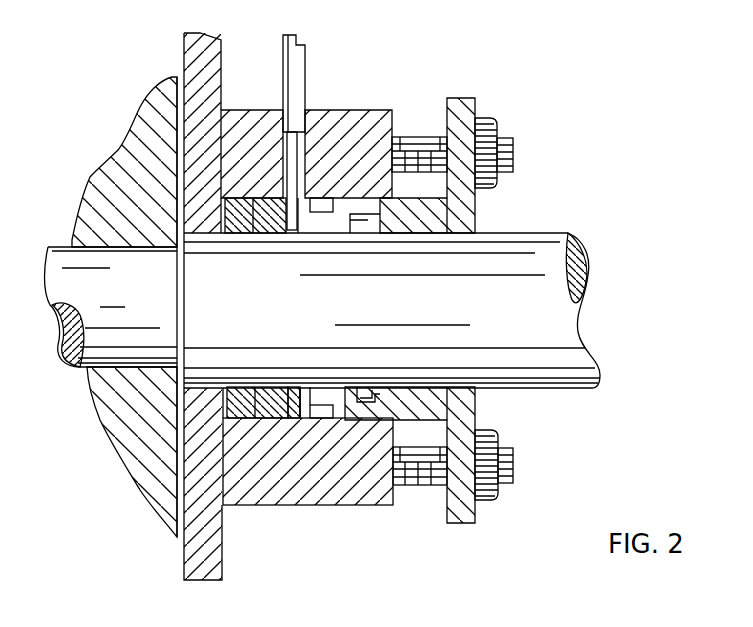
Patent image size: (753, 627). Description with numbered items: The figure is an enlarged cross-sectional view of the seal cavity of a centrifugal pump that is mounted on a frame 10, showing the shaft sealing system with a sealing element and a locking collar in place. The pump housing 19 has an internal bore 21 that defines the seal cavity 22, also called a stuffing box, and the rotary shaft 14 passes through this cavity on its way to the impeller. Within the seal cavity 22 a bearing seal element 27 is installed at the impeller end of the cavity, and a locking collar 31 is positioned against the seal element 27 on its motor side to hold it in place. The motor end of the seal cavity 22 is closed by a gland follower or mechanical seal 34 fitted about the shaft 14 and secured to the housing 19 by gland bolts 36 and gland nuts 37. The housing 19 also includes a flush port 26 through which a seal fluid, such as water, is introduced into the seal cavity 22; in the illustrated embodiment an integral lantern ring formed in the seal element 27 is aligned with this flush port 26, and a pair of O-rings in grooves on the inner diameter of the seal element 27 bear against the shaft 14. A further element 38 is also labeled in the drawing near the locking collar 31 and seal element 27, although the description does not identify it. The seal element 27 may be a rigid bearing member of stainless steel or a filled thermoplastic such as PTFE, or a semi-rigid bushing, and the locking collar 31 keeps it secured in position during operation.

The frame 10 is at (494, 214).
The rotary shaft 14 is at (548, 253).
The housing 19 is at (203, 512).
The internal bore 21 is at (262, 234).
The seal cavity 22 is at (344, 232).
The flush port 26 is at (306, 70).
The seal element 27 is at (246, 387).
The locking collar 31 is at (325, 197).
The gland follower 34 is at (476, 118).
The gland bolts 36 is at (478, 118).
The gland nuts 37 is at (514, 160).
The pin 38 is at (290, 402).